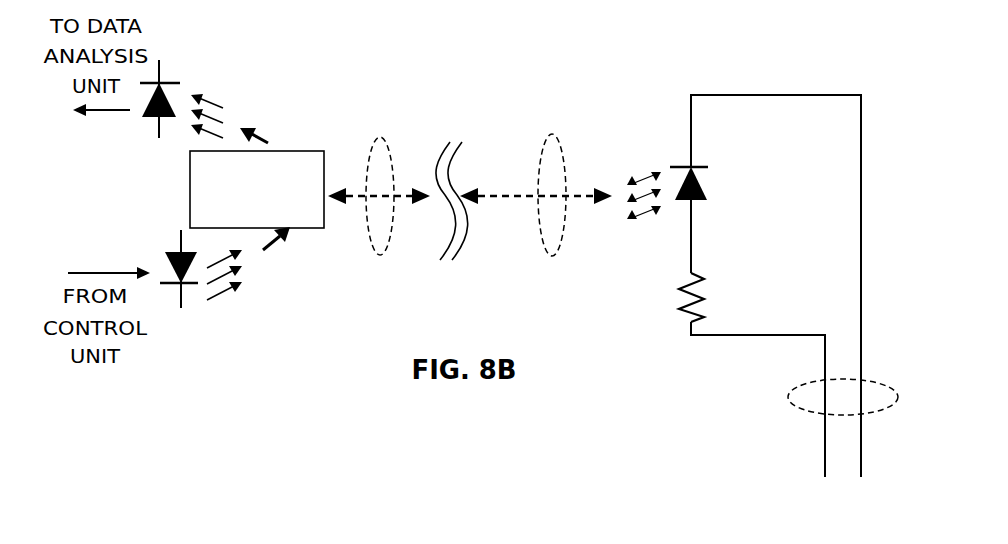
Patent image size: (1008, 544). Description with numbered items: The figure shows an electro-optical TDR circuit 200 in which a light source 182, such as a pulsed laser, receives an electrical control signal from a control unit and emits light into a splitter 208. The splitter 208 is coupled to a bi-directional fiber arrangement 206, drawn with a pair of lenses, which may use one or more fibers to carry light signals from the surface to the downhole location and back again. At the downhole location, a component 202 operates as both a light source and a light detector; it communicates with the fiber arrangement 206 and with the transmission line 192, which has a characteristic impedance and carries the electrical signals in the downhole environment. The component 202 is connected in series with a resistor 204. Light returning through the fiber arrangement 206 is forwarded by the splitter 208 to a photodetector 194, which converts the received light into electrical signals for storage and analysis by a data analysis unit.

The light source 182 is at (173, 250).
The transmission line 192 is at (788, 397).
The photodetector 194 is at (147, 113).
The electro-optical TDR circuit 200 is at (306, 390).
The component 202 is at (703, 193).
The resistor (R2) 204 is at (687, 310).
The bi-directional fiber arrangement 206 is at (381, 134).
The splitter 208 is at (240, 217).